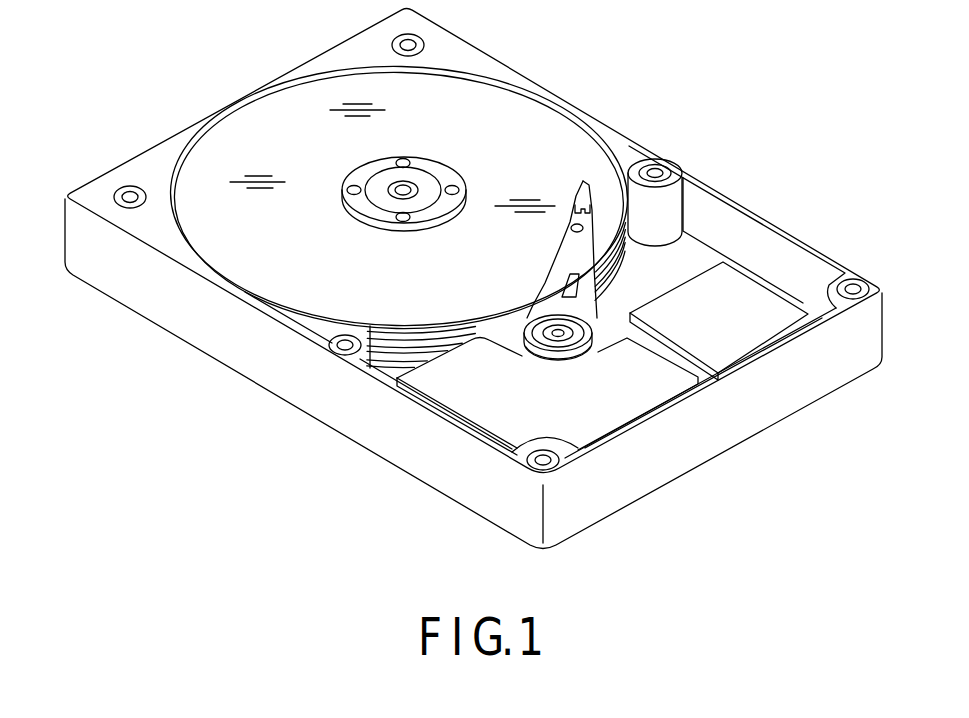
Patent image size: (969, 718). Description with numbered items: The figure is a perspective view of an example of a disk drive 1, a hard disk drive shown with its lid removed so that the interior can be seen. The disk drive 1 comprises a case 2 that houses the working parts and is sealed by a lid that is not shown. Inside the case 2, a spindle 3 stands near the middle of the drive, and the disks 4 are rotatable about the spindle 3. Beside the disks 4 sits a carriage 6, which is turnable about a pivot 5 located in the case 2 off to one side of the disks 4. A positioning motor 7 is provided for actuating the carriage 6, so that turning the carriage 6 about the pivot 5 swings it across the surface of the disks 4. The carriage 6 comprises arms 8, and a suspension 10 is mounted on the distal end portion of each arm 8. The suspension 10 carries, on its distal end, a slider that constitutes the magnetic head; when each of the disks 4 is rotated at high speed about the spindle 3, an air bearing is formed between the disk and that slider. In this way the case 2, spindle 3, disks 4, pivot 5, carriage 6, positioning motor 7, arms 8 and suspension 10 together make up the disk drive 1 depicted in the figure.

The disk drive 1 is at (770, 93).
The case 2 is at (267, 377).
The spindle 3 is at (418, 180).
The disks 4 is at (518, 122).
The pivot 5 is at (574, 343).
The carriage 6 is at (579, 308).
The positioning motor 7 is at (480, 413).
The arm 8 is at (583, 248).
The suspension 10 is at (582, 187).